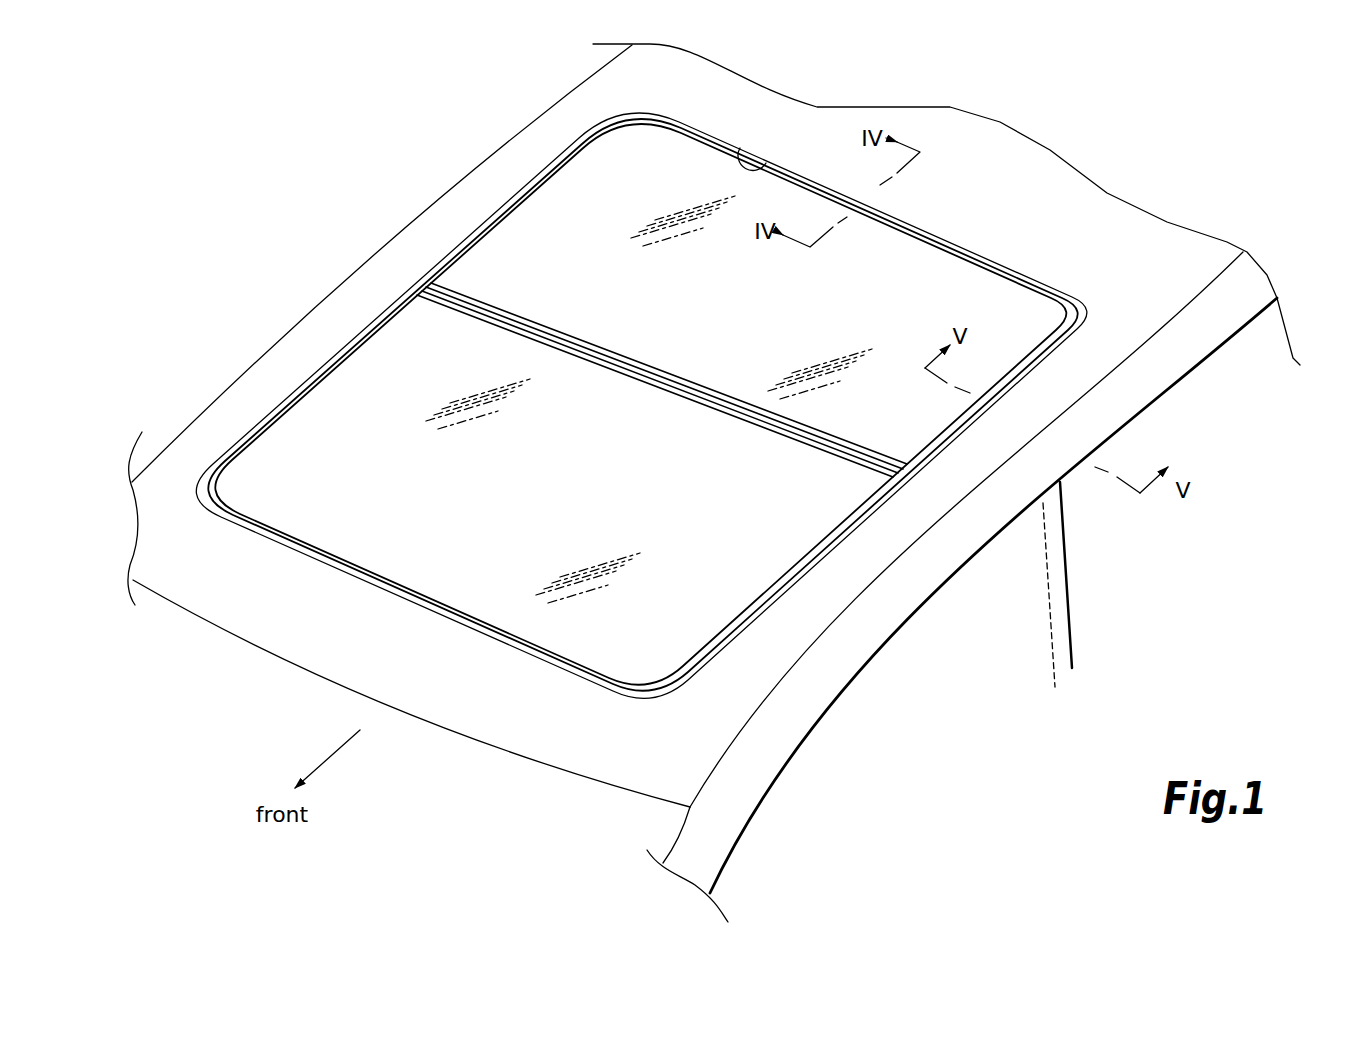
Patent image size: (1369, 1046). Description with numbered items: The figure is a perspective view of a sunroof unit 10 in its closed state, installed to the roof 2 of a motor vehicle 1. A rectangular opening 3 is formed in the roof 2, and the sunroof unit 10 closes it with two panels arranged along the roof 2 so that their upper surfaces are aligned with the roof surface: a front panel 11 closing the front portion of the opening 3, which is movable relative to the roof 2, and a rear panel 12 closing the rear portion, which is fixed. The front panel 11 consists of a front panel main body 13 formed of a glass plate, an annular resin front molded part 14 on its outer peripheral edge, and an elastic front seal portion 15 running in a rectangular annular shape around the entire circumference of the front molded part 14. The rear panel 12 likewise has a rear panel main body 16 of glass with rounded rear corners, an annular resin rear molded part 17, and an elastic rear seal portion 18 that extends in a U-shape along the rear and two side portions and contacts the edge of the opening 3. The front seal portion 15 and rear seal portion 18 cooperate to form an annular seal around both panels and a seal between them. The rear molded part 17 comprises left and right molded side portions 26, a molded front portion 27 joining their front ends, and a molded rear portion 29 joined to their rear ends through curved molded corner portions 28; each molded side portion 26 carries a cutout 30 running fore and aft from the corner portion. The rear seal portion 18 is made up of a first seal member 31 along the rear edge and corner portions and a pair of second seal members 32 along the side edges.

The motor vehicle 1 is at (418, 98).
The roof 2 is at (598, 58).
The opening 3 is at (770, 152).
The sunroof unit 10 is at (968, 212).
The front panel 11 is at (278, 398).
The rear panel 12 is at (485, 205).
The front panel main body 13 is at (380, 342).
The front molded part 14 is at (337, 357).
The front seal portion 15 is at (302, 383).
The rear panel main body 16 is at (583, 183).
The rear molded part 17 is at (533, 175).
The rear seal portion 18 is at (505, 192).
The molded side portion 26 is at (437, 257).
The molded front portion 27 is at (847, 477).
The molded corner portion 28 is at (622, 112).
The molded rear portion 29 is at (1020, 268).
The cutout 30 is at (1068, 340).
The first seal member 31 is at (1093, 315).
The second seal member 32 is at (513, 192).